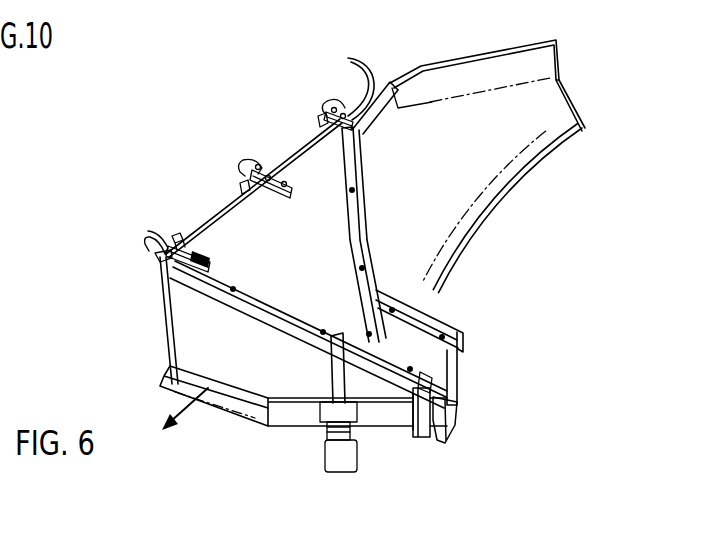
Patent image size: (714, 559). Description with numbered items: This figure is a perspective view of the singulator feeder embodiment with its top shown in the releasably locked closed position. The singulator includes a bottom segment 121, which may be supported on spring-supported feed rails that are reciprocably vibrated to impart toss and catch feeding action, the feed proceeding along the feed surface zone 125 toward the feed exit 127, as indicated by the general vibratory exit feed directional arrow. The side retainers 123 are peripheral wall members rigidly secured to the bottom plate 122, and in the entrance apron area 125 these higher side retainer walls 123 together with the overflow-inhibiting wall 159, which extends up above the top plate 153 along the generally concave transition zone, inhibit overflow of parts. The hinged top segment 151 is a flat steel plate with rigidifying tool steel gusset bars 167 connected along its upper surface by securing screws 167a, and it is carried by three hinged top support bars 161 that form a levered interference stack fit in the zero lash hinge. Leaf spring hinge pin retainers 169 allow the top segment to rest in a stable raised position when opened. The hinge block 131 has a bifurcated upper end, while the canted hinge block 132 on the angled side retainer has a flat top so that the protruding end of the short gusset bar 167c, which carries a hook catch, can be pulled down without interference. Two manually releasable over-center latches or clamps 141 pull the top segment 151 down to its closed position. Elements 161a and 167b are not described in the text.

The bottom segment 121 is at (489, 57).
The bottom plate 122 is at (500, 222).
The side retainer 123 is at (437, 63).
The feed surface zone (entrance apron area) 125 is at (516, 141).
The feed exit 127 is at (222, 403).
The hinge block 131 is at (414, 428).
The hinge block (securing block) 132 is at (325, 407).
The over-center latch or clamp 141 is at (358, 460).
The hinged top segment 151 is at (311, 131).
The top plate 153 is at (230, 232).
The overflow-inhibiting wall 159 is at (369, 127).
The hinged top support bar 161 is at (262, 195).
The spring clip 161a is at (348, 58).
The gusset bar 167 is at (355, 236).
The securing screw 167a is at (359, 183).
The bracket 167b is at (398, 357).
The short top segment gusset bar 167c is at (334, 352).
The leaf spring hinge pin retainer 169 is at (150, 237).